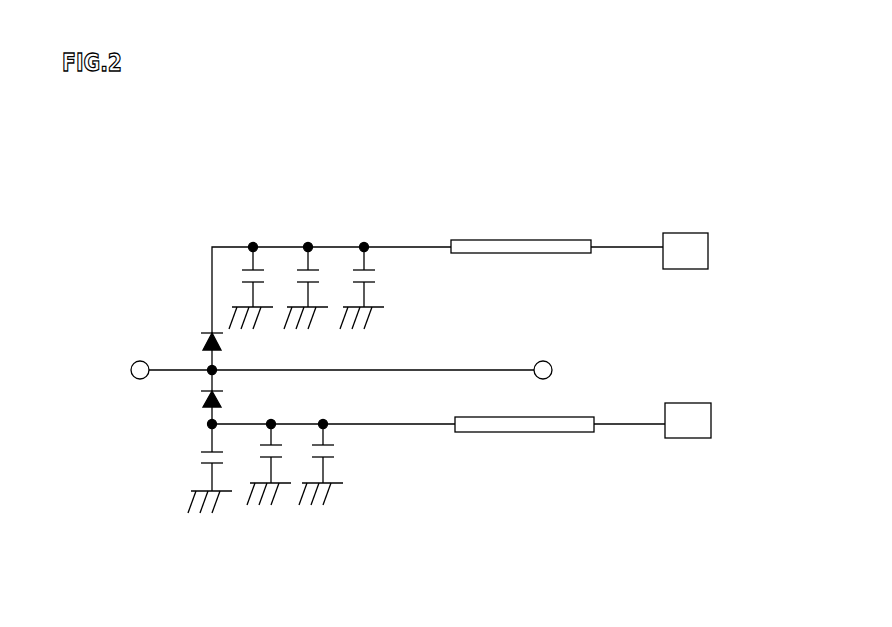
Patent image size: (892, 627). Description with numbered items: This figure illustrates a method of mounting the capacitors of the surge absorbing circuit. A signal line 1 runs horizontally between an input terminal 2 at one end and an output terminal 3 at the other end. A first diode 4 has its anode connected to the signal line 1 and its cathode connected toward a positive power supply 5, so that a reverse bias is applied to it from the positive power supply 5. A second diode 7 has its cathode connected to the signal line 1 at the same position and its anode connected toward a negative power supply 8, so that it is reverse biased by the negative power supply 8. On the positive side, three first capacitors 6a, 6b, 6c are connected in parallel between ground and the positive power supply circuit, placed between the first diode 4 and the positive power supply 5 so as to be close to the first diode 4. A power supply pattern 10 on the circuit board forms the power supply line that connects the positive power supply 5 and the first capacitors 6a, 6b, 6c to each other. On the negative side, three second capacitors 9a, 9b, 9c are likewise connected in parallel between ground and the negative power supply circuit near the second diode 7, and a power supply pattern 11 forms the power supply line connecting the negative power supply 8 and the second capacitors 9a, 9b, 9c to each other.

The signal line 1 is at (456, 350).
The input terminal 2 is at (120, 347).
The output terminal 3 is at (561, 349).
The first diode 4 is at (180, 307).
The positive power supply 5 is at (705, 222).
The first capacitor 6a is at (266, 240).
The first capacitor 6b is at (326, 242).
The first capacitor 6c is at (379, 246).
The second diode 7 is at (191, 416).
The negative power supply 8 is at (701, 450).
The second capacitor 9a is at (221, 481).
The second capacitor 9b is at (288, 490).
The second capacitor 9c is at (346, 484).
The power supply pattern 10 is at (519, 216).
The power supply pattern 11 is at (532, 445).